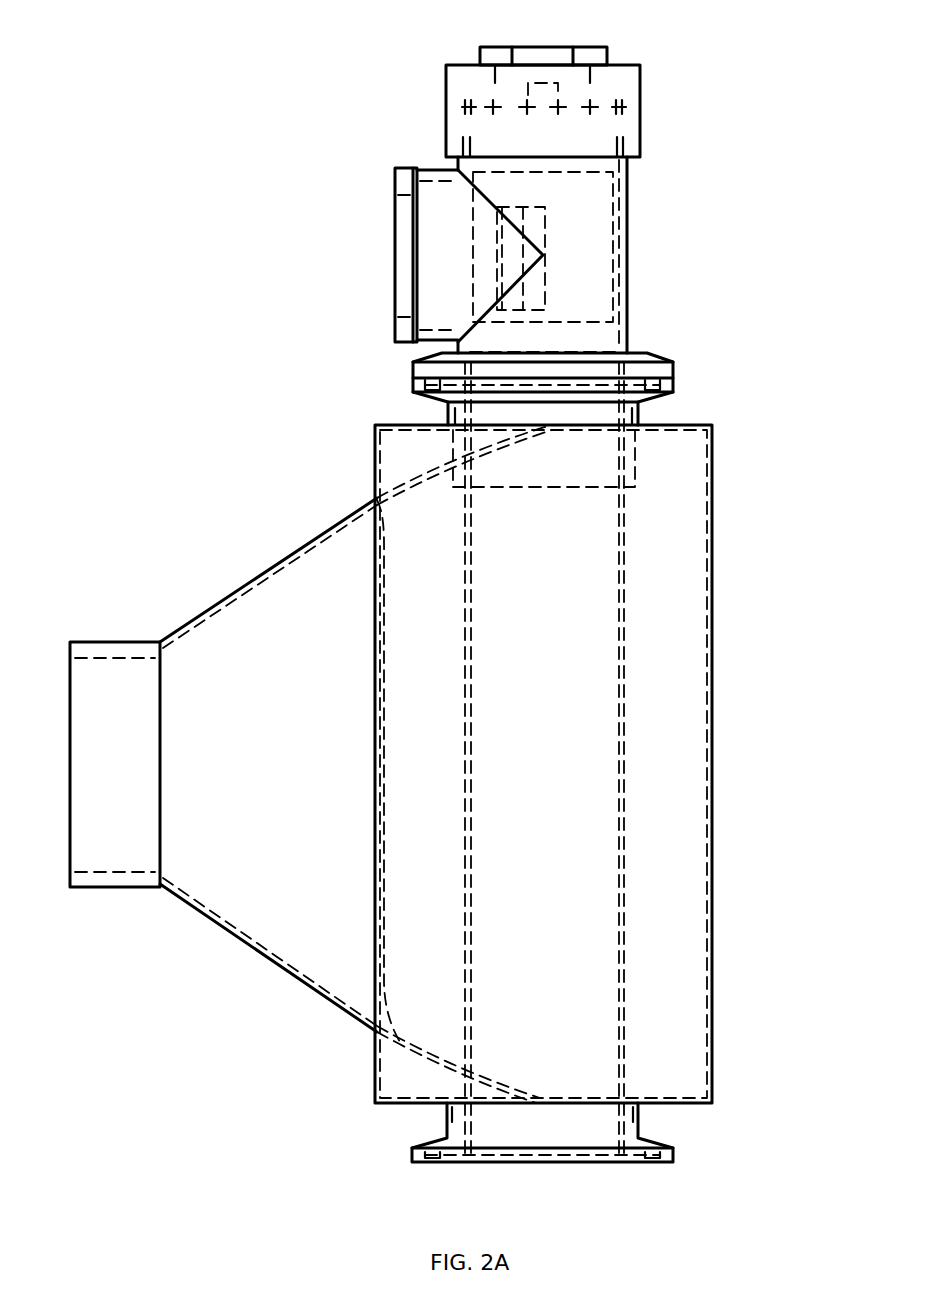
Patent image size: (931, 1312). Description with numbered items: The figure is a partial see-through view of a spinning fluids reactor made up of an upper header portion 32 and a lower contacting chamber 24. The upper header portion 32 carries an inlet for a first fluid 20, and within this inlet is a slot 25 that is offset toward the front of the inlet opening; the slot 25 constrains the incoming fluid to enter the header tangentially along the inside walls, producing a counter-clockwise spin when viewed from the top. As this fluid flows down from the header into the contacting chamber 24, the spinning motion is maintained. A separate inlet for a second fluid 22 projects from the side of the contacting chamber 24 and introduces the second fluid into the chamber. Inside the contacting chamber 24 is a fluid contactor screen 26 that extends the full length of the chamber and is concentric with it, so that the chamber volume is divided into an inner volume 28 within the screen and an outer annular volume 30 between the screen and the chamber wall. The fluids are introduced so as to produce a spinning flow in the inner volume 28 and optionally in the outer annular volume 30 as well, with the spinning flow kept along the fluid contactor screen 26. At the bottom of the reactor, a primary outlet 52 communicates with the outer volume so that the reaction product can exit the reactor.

The inlet for a first fluid 20 is at (393, 170).
The inlet for a second fluid 22 is at (88, 642).
The contacting chamber 24 is at (708, 480).
The slot 25 is at (497, 272).
The fluid contactor screen 26 is at (622, 610).
The inner volume 28 is at (568, 722).
The outer annular volume 30 is at (660, 842).
The upper header portion 32 is at (622, 228).
The primary outlet 52 is at (613, 1162).